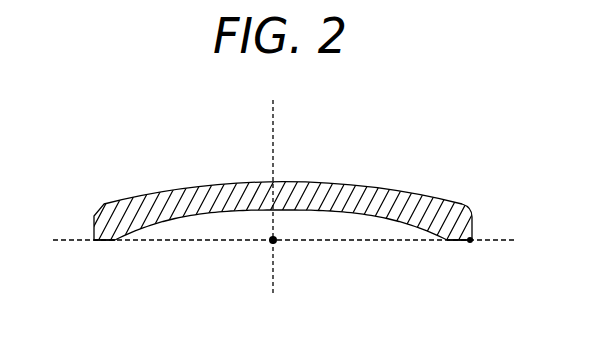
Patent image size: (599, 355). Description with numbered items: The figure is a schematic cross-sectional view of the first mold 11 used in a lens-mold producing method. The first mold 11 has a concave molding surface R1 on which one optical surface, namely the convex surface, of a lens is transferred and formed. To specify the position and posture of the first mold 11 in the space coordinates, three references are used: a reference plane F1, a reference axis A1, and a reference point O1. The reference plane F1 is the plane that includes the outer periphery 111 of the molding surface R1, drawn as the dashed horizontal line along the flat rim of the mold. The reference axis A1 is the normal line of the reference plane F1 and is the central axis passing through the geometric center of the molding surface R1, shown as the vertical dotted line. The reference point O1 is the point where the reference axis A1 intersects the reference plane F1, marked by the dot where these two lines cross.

The first mold 11 is at (113, 220).
The outer periphery 111 is at (117, 240).
The reference axis A1 is at (274, 183).
The reference point O1 is at (275, 242).
The concave molding surface R1 is at (375, 218).
The reference plane F1 is at (502, 242).